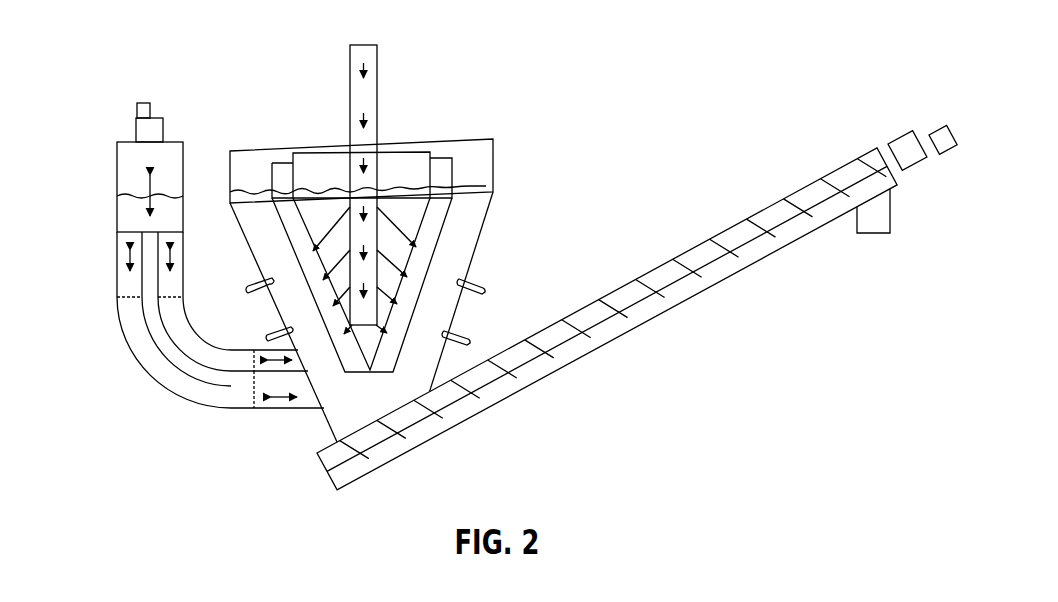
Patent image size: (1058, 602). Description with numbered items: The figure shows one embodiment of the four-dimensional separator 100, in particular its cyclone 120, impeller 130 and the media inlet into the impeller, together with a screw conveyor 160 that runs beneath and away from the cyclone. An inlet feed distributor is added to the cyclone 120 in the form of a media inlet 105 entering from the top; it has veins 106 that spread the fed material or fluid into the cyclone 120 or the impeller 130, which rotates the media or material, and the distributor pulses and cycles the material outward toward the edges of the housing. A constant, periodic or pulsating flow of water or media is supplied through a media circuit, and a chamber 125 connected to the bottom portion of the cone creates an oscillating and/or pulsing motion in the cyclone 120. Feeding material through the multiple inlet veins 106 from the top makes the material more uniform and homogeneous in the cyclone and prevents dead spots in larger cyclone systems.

The four-dimensional separator 100 is at (535, 49).
The media inlet 105 is at (378, 63).
The veins 106 is at (327, 221).
The cyclone 120 is at (493, 165).
The chamber 125 is at (117, 173).
The impeller 130 is at (443, 158).
The screw conveyor 160 is at (818, 180).